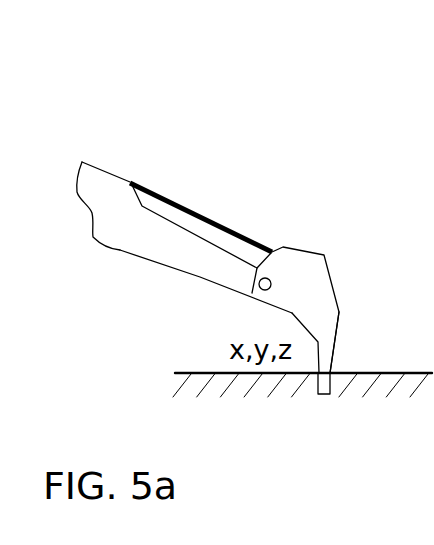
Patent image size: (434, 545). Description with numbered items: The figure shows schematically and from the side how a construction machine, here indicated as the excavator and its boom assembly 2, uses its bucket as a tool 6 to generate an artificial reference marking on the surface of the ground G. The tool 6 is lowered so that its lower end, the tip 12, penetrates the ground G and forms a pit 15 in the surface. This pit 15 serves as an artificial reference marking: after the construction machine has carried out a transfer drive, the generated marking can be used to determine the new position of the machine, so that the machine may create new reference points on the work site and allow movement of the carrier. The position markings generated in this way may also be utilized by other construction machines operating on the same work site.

The tool / implement 2 is at (175, 159).
The tool 6 is at (311, 278).
The tip 12 is at (332, 372).
The pit 15 is at (320, 394).
The ground G is at (200, 372).